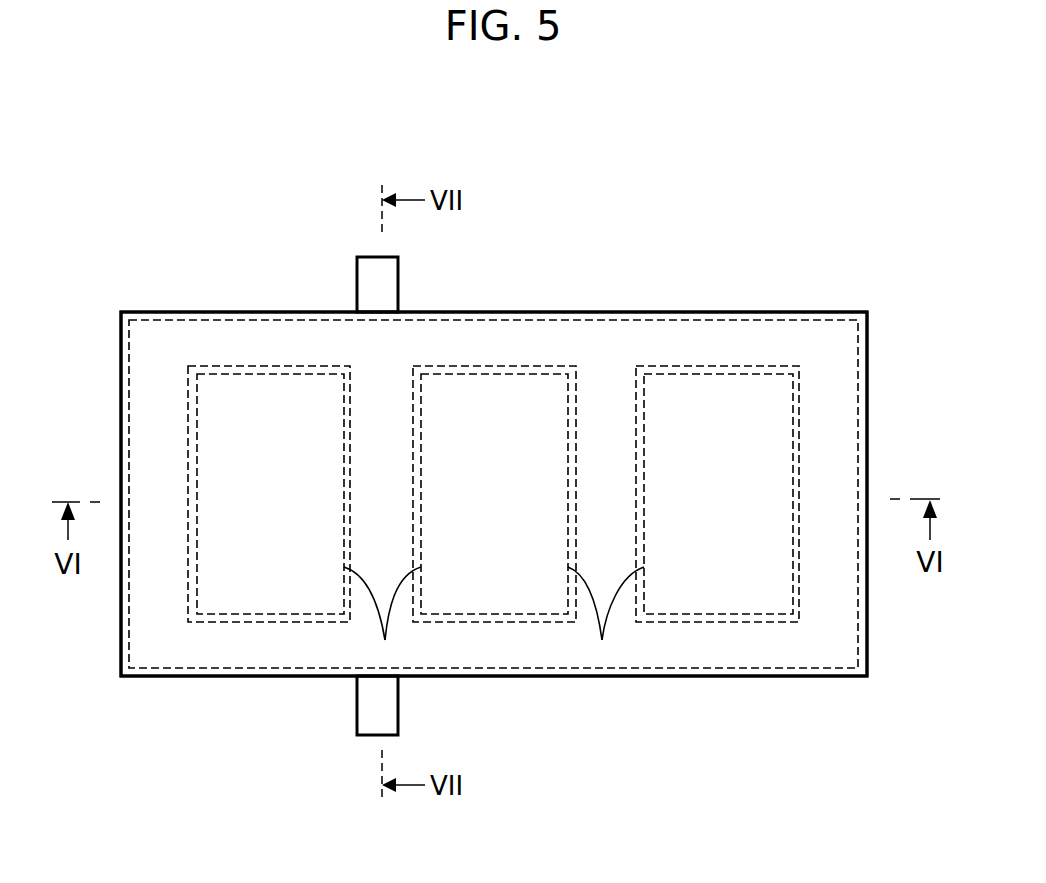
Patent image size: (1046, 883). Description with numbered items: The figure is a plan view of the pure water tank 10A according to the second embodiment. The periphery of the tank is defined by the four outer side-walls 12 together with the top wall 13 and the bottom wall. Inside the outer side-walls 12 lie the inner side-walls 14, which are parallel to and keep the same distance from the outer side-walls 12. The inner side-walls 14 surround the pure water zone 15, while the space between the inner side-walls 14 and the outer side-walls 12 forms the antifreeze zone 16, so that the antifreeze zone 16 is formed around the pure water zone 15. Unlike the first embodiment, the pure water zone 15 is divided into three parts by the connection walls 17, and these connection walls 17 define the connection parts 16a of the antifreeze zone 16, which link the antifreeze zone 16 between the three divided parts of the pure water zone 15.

The pure water tank 10A is at (174, 232).
The outer side-walls 12 is at (653, 672).
The top wall 13 is at (180, 643).
The inner side-walls 14 is at (262, 618).
The pure water zone 15 is at (278, 397).
The antifreeze zone 16 is at (825, 415).
The connection parts 16a is at (383, 413).
The connection walls 17 is at (385, 640).